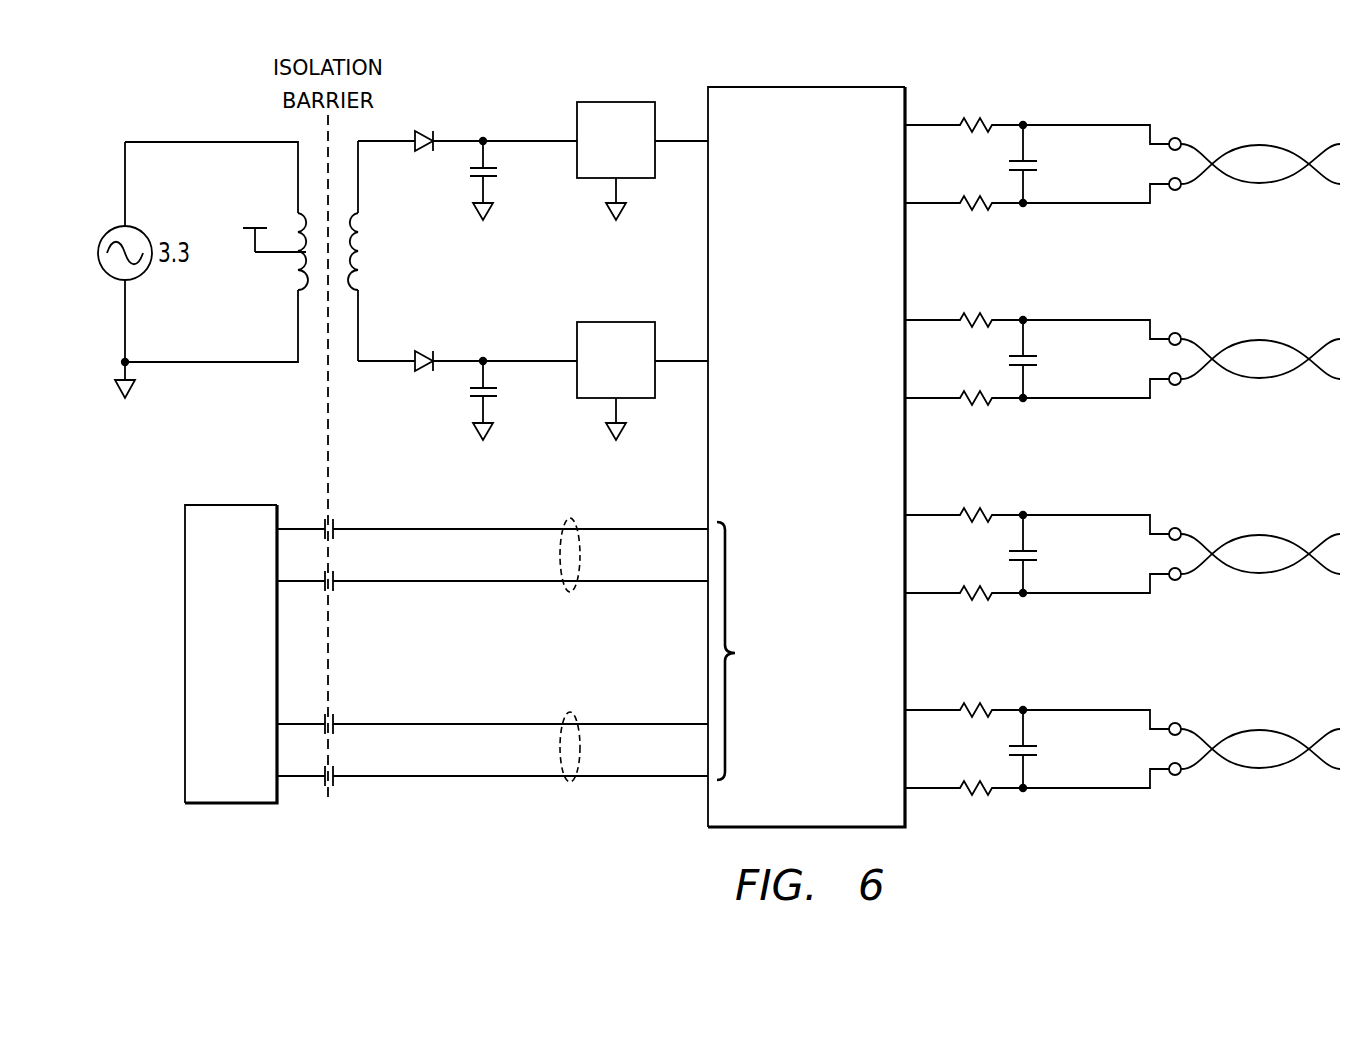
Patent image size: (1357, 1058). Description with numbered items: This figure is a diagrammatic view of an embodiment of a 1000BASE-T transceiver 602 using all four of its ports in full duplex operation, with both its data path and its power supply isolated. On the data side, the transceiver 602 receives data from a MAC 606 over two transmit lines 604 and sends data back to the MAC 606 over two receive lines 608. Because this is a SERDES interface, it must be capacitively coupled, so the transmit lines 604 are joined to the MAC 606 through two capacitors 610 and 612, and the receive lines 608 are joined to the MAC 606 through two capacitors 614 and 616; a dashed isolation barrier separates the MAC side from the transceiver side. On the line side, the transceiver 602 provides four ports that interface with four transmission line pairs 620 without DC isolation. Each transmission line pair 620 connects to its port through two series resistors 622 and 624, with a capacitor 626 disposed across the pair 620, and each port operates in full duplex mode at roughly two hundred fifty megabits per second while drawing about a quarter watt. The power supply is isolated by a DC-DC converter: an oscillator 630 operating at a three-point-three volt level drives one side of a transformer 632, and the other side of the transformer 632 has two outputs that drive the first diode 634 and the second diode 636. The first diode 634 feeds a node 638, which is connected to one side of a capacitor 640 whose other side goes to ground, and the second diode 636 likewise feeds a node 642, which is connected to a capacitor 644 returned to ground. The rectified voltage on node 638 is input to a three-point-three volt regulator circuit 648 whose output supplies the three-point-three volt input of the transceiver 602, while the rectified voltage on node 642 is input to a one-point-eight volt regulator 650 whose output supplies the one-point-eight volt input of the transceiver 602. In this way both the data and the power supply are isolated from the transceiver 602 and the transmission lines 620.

The 1000BASE-T transceiver 602 is at (803, 87).
The transmit lines 604 is at (570, 518).
The MAC 606 is at (232, 803).
The receive lines 608 is at (570, 782).
The capacitor 610 is at (337, 522).
The capacitor 612 is at (337, 590).
The capacitor 614 is at (337, 789).
The capacitor 616 is at (337, 717).
The transmission line pair 620 is at (1260, 145).
The series resistor 622 is at (977, 117).
The series resistor 624 is at (978, 196).
The capacitor 626 is at (1040, 165).
The oscillator 630 is at (98, 250).
The transformer 632 is at (305, 280).
The first diode 634 is at (428, 131).
The second diode 636 is at (428, 351).
The node 638 is at (487, 139).
The capacitor 640 is at (470, 172).
The node 642 is at (487, 359).
The capacitor 644 is at (470, 392).
The 3.3 volt regulator circuit 648 is at (616, 102).
The 1.8 volt regulator 650 is at (616, 322).